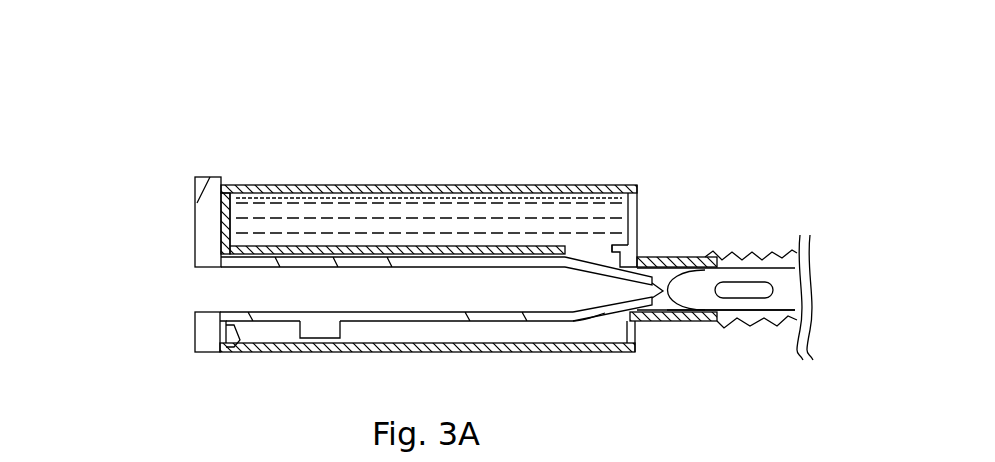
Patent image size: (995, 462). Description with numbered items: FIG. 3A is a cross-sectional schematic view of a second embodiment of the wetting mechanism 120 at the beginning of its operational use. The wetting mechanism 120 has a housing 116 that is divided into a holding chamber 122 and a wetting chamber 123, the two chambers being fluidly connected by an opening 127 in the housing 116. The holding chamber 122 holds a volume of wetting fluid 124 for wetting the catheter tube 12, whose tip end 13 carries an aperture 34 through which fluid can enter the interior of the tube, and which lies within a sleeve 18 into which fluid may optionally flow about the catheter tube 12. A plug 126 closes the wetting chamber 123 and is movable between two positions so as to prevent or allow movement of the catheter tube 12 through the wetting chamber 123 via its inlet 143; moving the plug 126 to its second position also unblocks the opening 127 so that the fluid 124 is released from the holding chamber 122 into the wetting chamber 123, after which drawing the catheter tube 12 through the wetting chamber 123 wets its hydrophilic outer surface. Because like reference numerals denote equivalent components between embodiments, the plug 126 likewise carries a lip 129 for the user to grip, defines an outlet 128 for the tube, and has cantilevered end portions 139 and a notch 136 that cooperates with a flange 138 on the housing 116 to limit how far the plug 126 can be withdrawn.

The wetting mechanism 120 is at (672, 97).
The holding chamber 122 is at (552, 185).
The fluid 124 is at (317, 213).
The housing 116 is at (443, 182).
The opening 127 is at (583, 257).
The end cap 129 is at (205, 177).
The gap 128 is at (210, 295).
The plug 126 is at (192, 328).
The recess 136 is at (323, 332).
The retaining hook 138 is at (233, 343).
The wetting chamber 123 is at (548, 298).
The latch 139 is at (637, 262).
The inlet 143 is at (672, 266).
The sleeve 18 is at (733, 257).
The aperture 34 is at (743, 292).
The tip end 13 is at (702, 308).
The catheter tube 12 is at (790, 335).